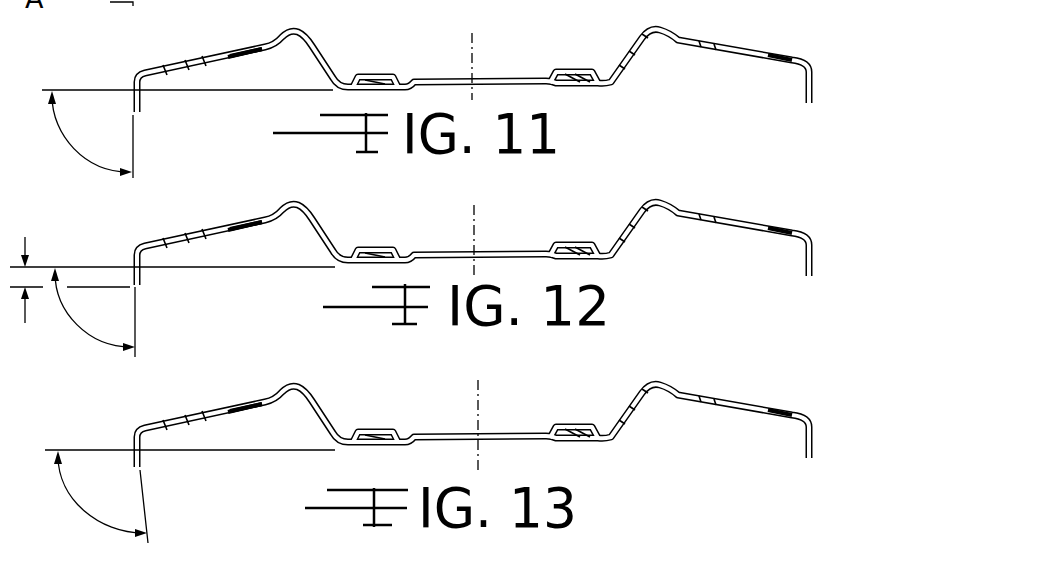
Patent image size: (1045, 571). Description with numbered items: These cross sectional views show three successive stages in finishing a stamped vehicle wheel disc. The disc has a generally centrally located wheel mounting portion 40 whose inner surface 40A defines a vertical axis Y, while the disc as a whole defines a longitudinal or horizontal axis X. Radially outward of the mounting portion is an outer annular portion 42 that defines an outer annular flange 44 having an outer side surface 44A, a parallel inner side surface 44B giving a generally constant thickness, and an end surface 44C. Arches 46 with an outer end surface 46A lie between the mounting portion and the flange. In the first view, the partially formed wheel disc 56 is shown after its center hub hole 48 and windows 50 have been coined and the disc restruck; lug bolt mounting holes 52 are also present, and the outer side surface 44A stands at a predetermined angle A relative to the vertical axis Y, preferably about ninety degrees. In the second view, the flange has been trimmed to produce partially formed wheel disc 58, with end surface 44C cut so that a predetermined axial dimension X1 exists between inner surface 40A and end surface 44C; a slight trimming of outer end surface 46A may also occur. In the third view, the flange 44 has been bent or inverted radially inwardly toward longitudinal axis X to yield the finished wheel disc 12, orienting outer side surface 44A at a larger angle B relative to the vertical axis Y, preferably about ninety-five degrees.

In FIG. 13, the finished wheel disc 12 is at (672, 372).
In FIG. 11, the wheel mounting portion 40 is at (350, 100).
In FIG. 12, the wheel mounting portion 40 is at (356, 276).
In FIG. 13, the wheel mounting portion 40 is at (473, 425).
In FIG. 11, the inner surface of wheel mounting portion 40A is at (392, 87).
In FIG. 12, the inner surface of wheel mounting portion 40A is at (391, 260).
In FIG. 13, the inner surface of wheel mounting portion 40A is at (377, 447).
In FIG. 11, the outer annular portion 42 is at (800, 60).
In FIG. 12, the outer annular portion 42 is at (800, 232).
In FIG. 13, the outer annular portion 42 is at (800, 410).
In FIG. 11, the outer annular flange 44 is at (817, 90).
In FIG. 12, the outer annular flange 44 is at (817, 260).
In FIG. 13, the outer annular flange 44 is at (820, 447).
In FIG. 11, the outer side surface 44A is at (133, 98).
In FIG. 12, the outer side surface 44A is at (133, 272).
In FIG. 13, the outer side surface 44A is at (140, 455).
In FIG. 11, the inner side surface 44B is at (140, 98).
In FIG. 12, the inner side surface 44B is at (143, 272).
In FIG. 13, the inner side surface 44B is at (148, 458).
In FIG. 11, the end surface 44C is at (157, 147).
In FIG. 12, the end surface 44C is at (141, 290).
In FIG. 11, the arches 46 is at (803, 90).
In FIG. 12, the arches 46 is at (803, 260).
In FIG. 13, the arches 46 is at (802, 448).
In FIG. 11, the outer end surface of arches 46A is at (807, 106).
In FIG. 12, the outer end surface of arches 46A is at (806, 276).
In FIG. 11, the center hub hole 48 is at (428, 80).
In FIG. 12, the center hub hole 48 is at (430, 255).
In FIG. 13, the center hub hole 48 is at (430, 435).
In FIG. 11, the windows 50 is at (232, 50).
In FIG. 12, the windows 50 is at (240, 225).
In FIG. 13, the windows 50 is at (240, 408).
In FIG. 11, the lug bolt mounting holes 52 is at (587, 86).
In FIG. 12, the lug bolt mounting holes 52 is at (592, 254).
In FIG. 13, the lug bolt mounting holes 52 is at (586, 446).
In FIG. 11, the partially formed wheel disc 56 is at (666, 24).
In FIG. 12, the partially formed wheel disc 58 is at (678, 183).
In FIG. 11, the angle A is at (68, 140).
In FIG. 12, the angle A is at (67, 317).
In FIG. 13, the angle B is at (77, 510).
In FIG. 11, the longitudinal axis X is at (472, 36).
In FIG. 12, the longitudinal axis X is at (474, 210).
In FIG. 13, the longitudinal axis X is at (478, 382).
In FIG. 12, the axial dimension X1 is at (20, 277).
In FIG. 11, the vertical axis Y is at (243, 89).
In FIG. 12, the vertical axis Y is at (240, 266).
In FIG. 13, the vertical axis Y is at (207, 450).